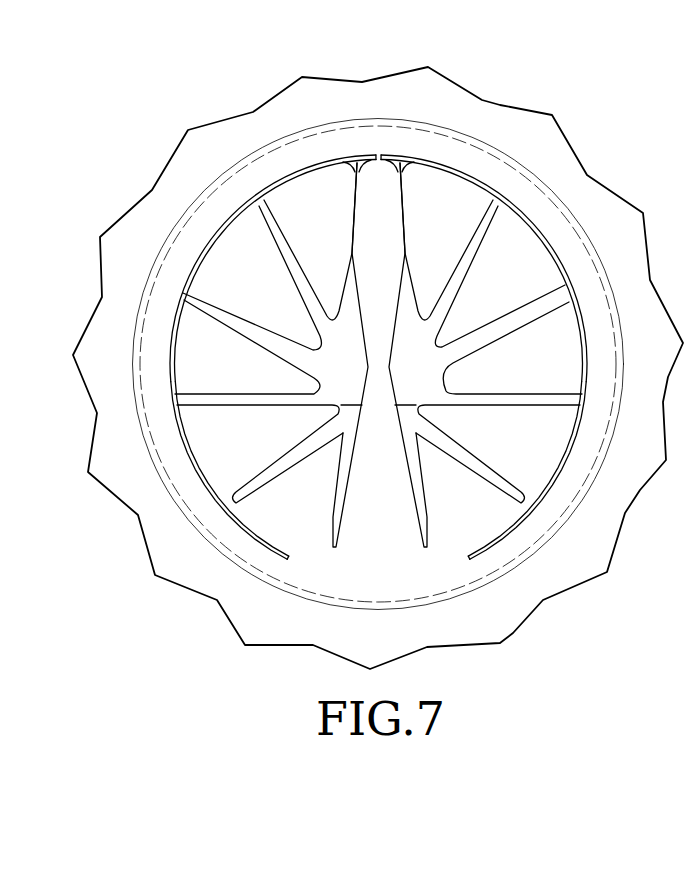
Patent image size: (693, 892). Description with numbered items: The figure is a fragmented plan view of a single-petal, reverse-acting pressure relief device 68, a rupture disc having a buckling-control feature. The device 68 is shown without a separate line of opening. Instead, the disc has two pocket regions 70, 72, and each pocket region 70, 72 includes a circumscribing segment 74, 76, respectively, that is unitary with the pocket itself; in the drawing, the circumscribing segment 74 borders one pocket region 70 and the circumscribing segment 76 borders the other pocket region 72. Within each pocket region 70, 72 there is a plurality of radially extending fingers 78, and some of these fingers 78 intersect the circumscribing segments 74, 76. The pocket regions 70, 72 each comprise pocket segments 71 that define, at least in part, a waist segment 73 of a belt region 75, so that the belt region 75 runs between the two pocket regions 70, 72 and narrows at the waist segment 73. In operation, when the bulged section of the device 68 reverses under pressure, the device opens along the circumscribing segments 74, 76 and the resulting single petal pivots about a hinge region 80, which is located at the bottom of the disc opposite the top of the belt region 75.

The pressure relief device 68 is at (618, 146).
The pocket region 70 is at (412, 374).
The pocket segments 71 is at (395, 406).
The pocket region 72 is at (347, 376).
The waist segment 73 is at (382, 365).
The circumscribing segment 74 is at (588, 317).
The belt region 75 is at (378, 222).
The circumscribing segment 76 is at (170, 337).
The radially extending fingers 78 is at (232, 307).
The hinge region 80 is at (375, 575).